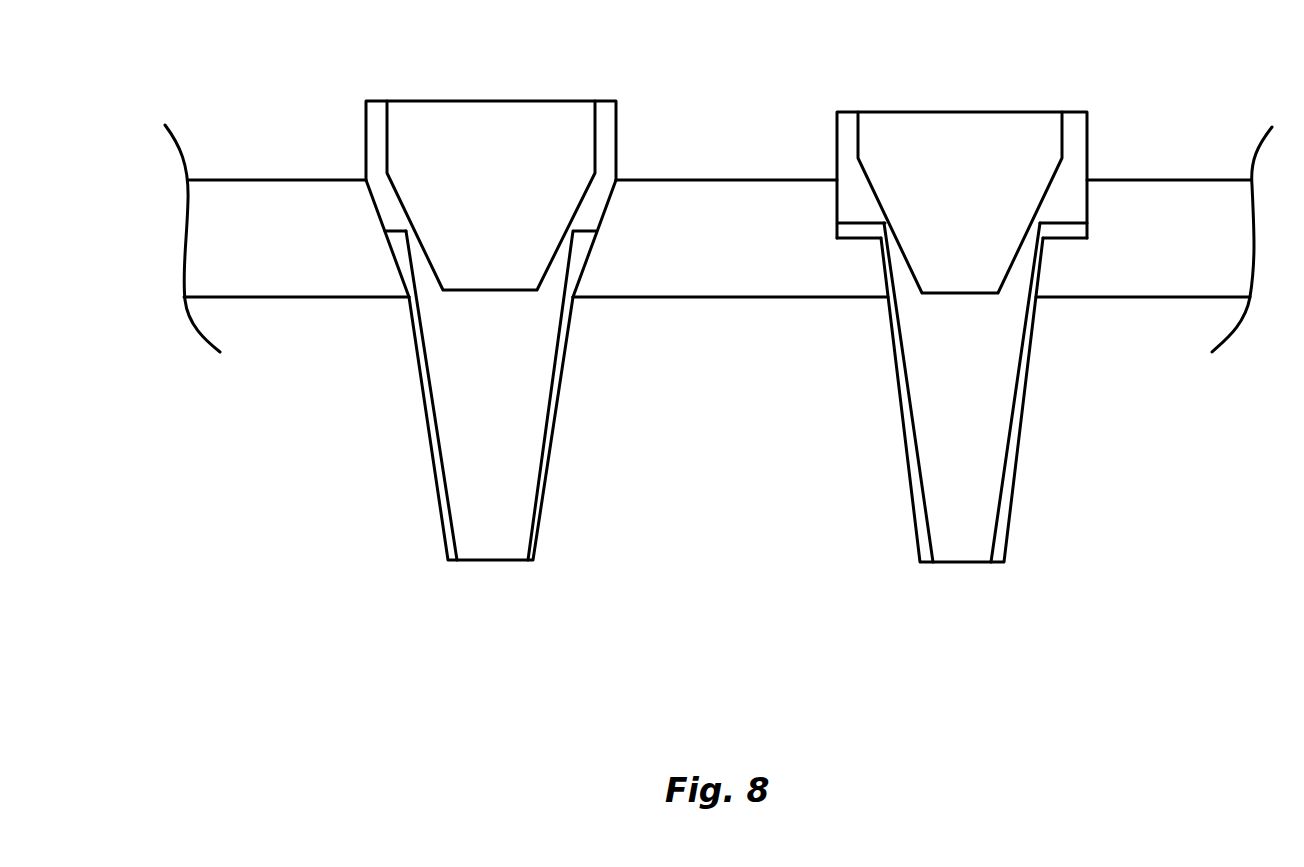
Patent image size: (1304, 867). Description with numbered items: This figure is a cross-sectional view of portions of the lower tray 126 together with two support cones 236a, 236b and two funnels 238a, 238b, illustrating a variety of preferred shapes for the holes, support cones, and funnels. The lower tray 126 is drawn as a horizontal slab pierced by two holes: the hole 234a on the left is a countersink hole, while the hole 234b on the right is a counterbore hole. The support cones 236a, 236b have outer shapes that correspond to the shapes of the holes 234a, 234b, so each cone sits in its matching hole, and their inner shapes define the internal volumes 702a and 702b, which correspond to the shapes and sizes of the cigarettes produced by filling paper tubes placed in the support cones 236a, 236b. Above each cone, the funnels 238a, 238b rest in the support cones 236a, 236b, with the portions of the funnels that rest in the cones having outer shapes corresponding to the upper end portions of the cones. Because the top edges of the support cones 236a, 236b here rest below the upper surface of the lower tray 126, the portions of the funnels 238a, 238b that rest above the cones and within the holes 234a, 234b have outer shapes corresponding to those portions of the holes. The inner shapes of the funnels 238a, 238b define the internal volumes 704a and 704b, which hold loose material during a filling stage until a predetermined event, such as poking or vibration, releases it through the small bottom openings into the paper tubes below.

The lower tray 126 is at (285, 168).
The internal volume 704a is at (478, 148).
The internal volume 704b is at (932, 158).
The internal volume 702a is at (475, 442).
The internal volume 702b is at (962, 422).
The hole 234a is at (583, 267).
The hole 234b is at (1042, 270).
The support cone 236a is at (550, 443).
The support cone 236b is at (1022, 450).
The funnel 238a is at (617, 147).
The funnel 238b is at (1088, 153).